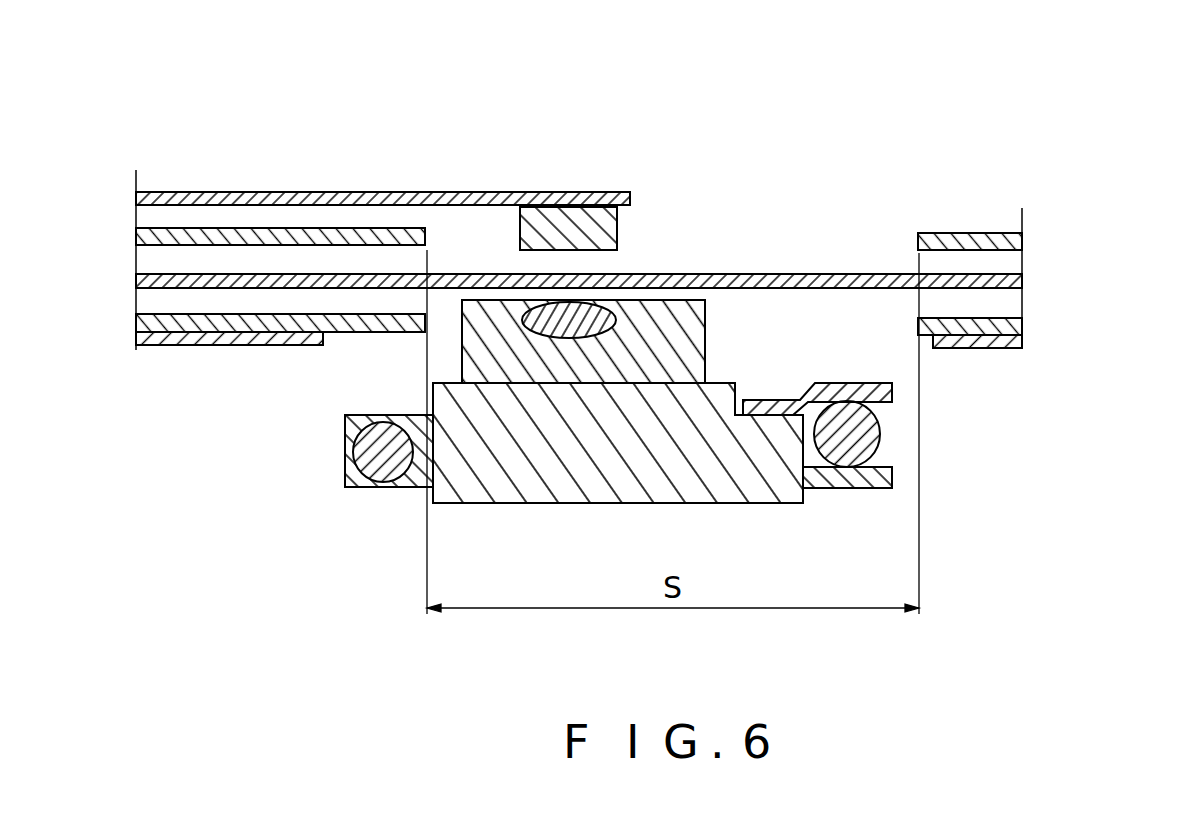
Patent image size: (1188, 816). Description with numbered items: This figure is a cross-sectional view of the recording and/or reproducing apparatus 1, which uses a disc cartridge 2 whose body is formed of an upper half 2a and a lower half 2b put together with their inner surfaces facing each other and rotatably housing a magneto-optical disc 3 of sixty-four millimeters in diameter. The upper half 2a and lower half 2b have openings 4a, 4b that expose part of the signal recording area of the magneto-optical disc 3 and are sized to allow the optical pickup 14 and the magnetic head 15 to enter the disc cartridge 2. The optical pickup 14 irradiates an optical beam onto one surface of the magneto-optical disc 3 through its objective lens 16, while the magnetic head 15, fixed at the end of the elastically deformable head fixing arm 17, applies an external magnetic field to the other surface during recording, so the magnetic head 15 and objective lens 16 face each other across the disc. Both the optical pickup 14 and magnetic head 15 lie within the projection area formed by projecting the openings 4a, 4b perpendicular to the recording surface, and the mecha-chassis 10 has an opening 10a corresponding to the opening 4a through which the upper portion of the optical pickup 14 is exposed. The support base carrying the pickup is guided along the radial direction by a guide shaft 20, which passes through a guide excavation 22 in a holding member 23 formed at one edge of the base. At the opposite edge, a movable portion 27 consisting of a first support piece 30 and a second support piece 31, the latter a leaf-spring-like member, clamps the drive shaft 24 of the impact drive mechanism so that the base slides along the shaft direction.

The recording and/or reproducing apparatus 1 is at (734, 116).
The disc cartridge 2 is at (1042, 278).
The upper half 2a is at (1023, 236).
The lower half 2b is at (1023, 326).
The magneto-optical disc 3 is at (814, 276).
The opening 4a is at (430, 230).
The opening 4b is at (424, 343).
The mecha-chassis 10 is at (1023, 345).
The opening 10a is at (325, 347).
The optical pickup 14 is at (690, 333).
The magnetic head 15 is at (566, 216).
The objective lens 16 is at (592, 301).
The head fixing arm 17 is at (313, 192).
The guide shaft 20 is at (385, 465).
The guide excavation 22 is at (358, 441).
The holding member 23 is at (346, 473).
The drive shaft 24 is at (848, 462).
The movable portion 27 is at (919, 466).
The first support piece 30 is at (890, 477).
The second support piece 31 is at (890, 393).